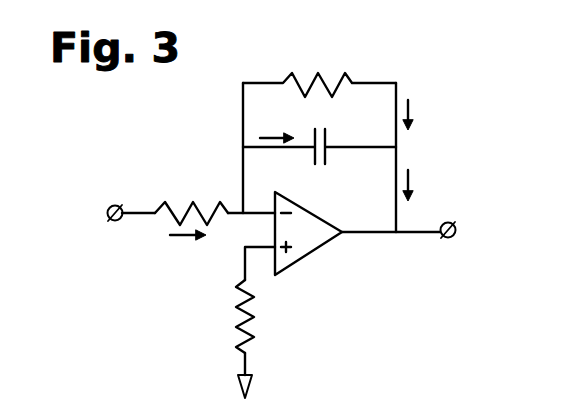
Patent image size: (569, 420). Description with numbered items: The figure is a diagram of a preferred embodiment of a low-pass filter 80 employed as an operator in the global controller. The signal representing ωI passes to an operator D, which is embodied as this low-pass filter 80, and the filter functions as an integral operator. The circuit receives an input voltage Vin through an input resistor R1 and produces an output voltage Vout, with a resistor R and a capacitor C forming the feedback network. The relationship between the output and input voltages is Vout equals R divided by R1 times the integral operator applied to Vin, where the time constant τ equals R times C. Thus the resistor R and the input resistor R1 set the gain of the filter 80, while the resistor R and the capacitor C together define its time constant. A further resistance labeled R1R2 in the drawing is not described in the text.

The low-pass filter 80 is at (181, 132).
The feedback resistor R is at (319, 68).
The capacitor C is at (319, 158).
The input resistor R1 is at (191, 194).
The bias resistor R1R2/(R1+R2) R1R2 is at (364, 316).